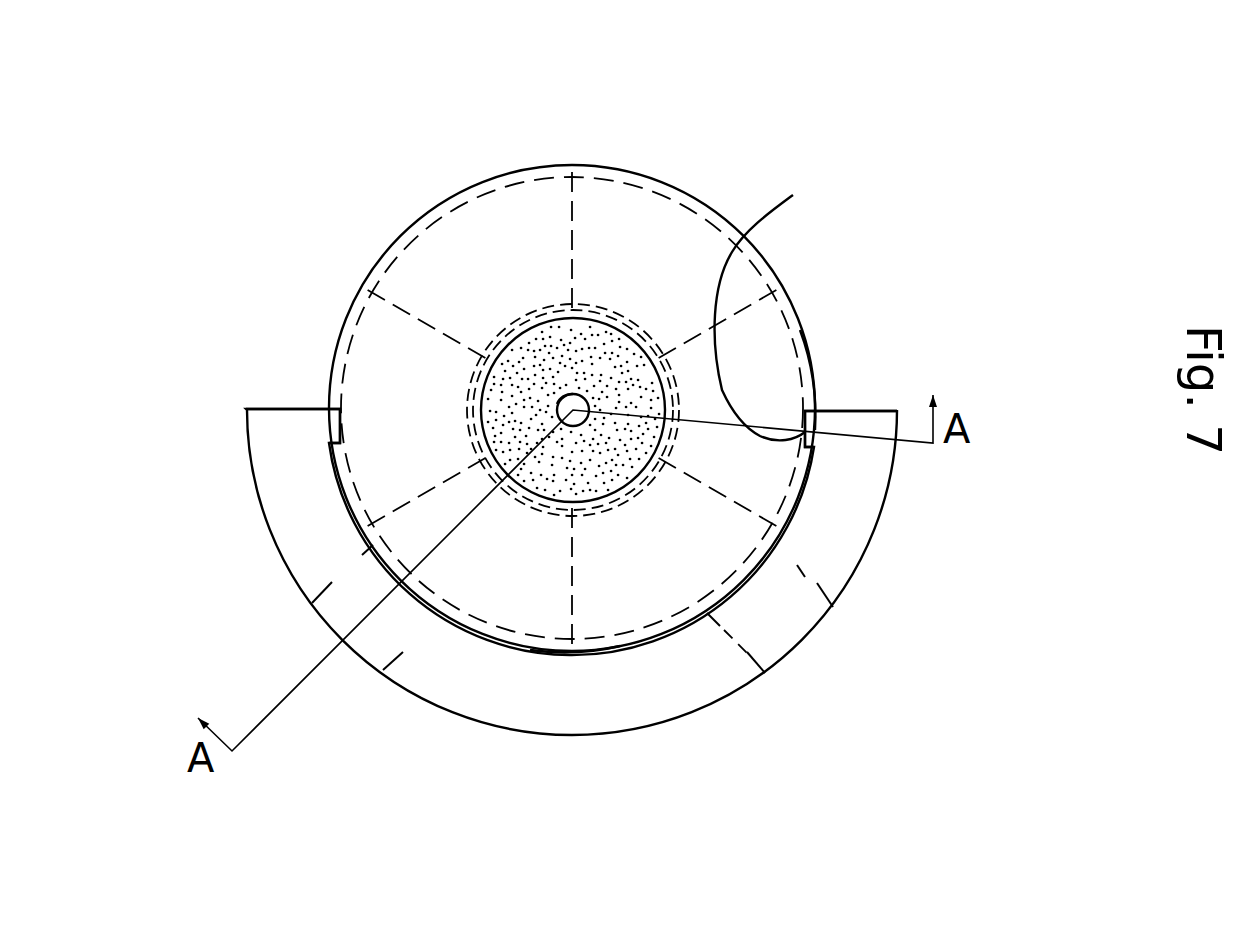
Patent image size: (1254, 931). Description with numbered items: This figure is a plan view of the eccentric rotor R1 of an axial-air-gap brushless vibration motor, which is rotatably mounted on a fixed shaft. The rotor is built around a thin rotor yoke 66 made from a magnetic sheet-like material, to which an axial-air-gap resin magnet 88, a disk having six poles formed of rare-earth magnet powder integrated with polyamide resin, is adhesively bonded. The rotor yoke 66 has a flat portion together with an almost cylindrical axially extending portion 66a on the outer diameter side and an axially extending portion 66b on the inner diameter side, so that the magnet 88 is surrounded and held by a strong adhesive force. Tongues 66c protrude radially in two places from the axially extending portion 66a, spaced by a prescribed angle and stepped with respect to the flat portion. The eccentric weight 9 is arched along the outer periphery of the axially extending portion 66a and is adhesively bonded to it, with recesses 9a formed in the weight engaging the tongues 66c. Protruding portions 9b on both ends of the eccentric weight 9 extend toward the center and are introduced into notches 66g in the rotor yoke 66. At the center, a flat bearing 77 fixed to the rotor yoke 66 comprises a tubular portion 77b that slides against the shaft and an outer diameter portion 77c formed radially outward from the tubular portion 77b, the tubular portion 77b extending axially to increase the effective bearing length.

The eccentric rotor R1 is at (390, 234).
The rotor yoke 66 is at (753, 338).
The axially extending portion on the outer diameter side 66a is at (817, 378).
The axially extending portion on the inner diameter side 66b is at (531, 322).
The tongues 66c is at (343, 572).
The notches 66g is at (802, 299).
The bearing 77 is at (556, 426).
The tubular portion 77b is at (552, 399).
The outer diameter portion 77c is at (620, 360).
The axial-air-gap resin magnet 88 is at (648, 198).
The eccentric weight 9 is at (738, 674).
The recesses 9a is at (424, 629).
The protruding portions 9b is at (807, 440).